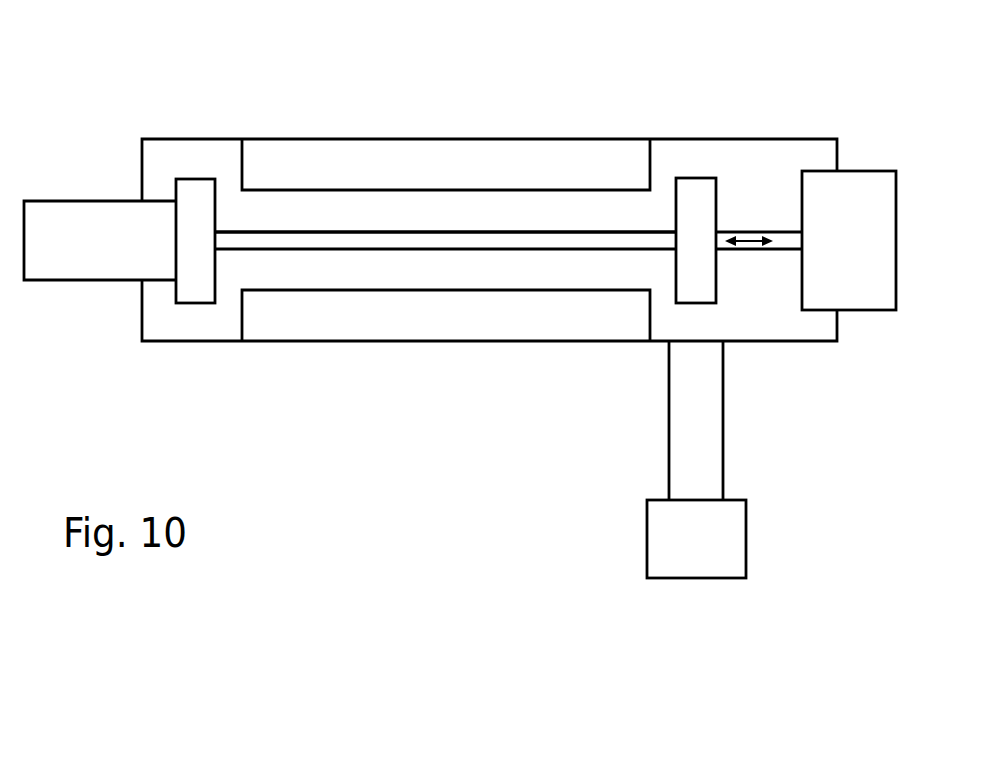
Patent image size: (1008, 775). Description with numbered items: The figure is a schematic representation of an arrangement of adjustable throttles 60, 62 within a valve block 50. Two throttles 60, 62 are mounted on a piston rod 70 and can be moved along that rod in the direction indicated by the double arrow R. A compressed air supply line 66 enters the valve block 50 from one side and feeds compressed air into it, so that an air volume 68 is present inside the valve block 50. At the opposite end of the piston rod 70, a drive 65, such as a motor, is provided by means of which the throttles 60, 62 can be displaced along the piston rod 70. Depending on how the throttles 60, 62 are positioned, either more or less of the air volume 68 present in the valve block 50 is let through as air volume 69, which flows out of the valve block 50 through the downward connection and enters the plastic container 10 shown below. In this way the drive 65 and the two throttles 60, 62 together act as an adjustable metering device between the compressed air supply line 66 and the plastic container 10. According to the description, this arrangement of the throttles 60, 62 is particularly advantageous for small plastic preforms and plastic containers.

The valve block 50 is at (765, 50).
The compressed air supply line 66 is at (78, 263).
The adjustable throttle 60 is at (197, 287).
The adjustable throttle 62 is at (691, 196).
The air volume 68 is at (392, 242).
The piston rod 70 is at (503, 233).
The direction of movement R is at (755, 237).
The drive 65 is at (877, 187).
The air volume 69 is at (703, 427).
The plastic container 10 is at (733, 534).